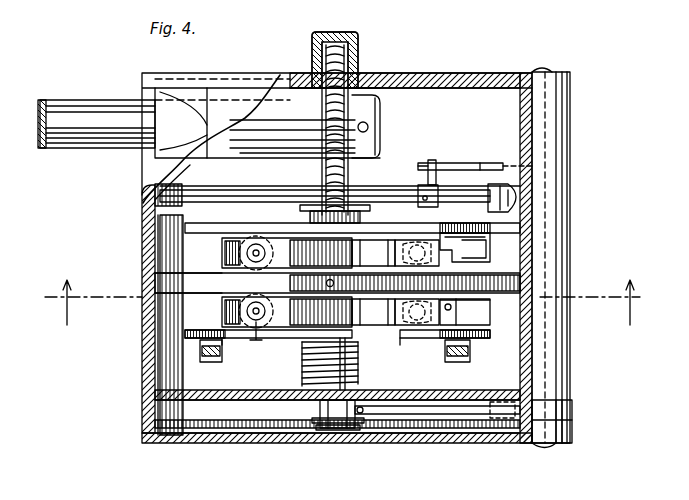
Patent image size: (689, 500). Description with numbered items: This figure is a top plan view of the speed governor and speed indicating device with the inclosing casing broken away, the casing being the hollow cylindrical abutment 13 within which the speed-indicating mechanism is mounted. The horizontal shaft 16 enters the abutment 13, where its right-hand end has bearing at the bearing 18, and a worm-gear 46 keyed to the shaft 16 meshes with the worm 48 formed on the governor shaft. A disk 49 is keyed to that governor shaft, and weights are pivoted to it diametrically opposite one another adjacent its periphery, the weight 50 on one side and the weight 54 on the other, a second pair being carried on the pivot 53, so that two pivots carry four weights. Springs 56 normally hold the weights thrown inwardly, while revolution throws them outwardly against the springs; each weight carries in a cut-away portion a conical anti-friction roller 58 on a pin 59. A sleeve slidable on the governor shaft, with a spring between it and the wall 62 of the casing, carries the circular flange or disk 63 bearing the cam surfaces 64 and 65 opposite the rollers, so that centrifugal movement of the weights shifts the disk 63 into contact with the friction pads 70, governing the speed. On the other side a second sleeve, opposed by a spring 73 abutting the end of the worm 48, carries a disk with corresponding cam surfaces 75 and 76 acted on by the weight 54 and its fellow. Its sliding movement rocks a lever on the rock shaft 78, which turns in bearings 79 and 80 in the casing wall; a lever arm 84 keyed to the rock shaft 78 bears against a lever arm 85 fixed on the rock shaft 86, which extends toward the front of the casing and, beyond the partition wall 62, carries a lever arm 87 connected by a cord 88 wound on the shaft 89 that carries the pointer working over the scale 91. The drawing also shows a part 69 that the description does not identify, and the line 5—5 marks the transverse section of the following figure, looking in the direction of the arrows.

The section line 5 is at (345, 302).
The abutment 13 is at (424, 82).
The horizontal shaft 16 is at (72, 108).
The bearing 18 is at (168, 92).
The worm-gear 46 is at (320, 174).
The worm 48 is at (368, 122).
The disk 49 is at (165, 280).
The weight 50 is at (268, 316).
The pivot point 53 is at (410, 328).
The weight 54 is at (287, 253).
The spring 56 is at (452, 310).
The conical anti-friction roller 58 is at (290, 296).
The pin 59 is at (298, 364).
The wall 62 is at (224, 400).
The disk 63 is at (262, 338).
The cam surface 64 is at (158, 320).
The cam surface 65 is at (490, 298).
The bolt 69 is at (232, 362).
The friction pad 70 is at (224, 352).
The spring 73 is at (360, 182).
The cam surface 75 is at (480, 252).
The cam surface 76 is at (188, 258).
The rock shaft 78 is at (388, 186).
The bearing 79 is at (185, 196).
The bearing 80 is at (505, 197).
The lever arm 84 is at (432, 160).
The lever arm 85 is at (466, 162).
The rock shaft 86 is at (542, 70).
The lever arm 87 is at (446, 418).
The cord 88 is at (362, 418).
The shaft 89 is at (322, 430).
The scale 91 is at (228, 432).